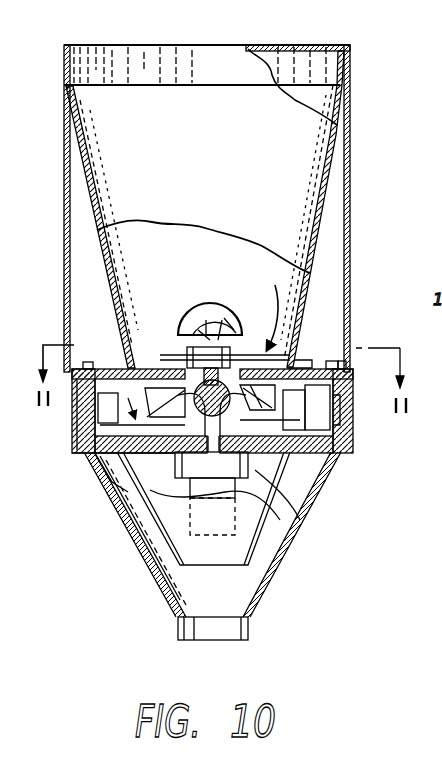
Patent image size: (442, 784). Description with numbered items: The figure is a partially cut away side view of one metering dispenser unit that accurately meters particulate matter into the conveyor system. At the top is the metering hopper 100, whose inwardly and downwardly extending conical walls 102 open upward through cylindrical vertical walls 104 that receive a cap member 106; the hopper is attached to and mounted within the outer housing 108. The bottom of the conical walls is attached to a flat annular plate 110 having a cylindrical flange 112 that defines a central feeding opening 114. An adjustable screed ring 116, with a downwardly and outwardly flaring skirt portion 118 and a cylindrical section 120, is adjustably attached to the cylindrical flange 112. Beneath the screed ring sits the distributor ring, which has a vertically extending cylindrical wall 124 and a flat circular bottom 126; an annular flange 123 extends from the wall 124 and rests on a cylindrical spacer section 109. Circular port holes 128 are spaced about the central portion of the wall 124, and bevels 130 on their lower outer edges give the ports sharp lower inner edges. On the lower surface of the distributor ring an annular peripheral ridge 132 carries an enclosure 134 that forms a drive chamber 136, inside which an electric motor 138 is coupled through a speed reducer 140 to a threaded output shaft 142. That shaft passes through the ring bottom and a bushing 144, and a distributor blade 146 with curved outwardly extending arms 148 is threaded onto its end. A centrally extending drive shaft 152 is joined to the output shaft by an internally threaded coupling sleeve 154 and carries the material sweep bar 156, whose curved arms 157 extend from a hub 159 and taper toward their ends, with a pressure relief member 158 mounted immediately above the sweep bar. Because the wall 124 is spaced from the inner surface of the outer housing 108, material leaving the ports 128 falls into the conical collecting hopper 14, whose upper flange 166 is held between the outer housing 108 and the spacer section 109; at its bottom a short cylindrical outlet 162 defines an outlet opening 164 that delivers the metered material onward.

The collecting hopper 14 is at (262, 585).
The metering hopper 100 is at (240, 185).
The conical walls 102 is at (310, 290).
The cylindrical vertical walls 104 is at (347, 72).
The cap member 106 is at (345, 47).
The outer housing 108 is at (344, 135).
The cylindrical spacer section 109 is at (367, 363).
The flat annular plate 110 is at (331, 365).
The cylindrical flange 112 is at (330, 384).
The central feeding opening 114 is at (300, 455).
The adjustable screed ring 116 is at (182, 360).
The skirt portion 118 is at (288, 492).
The cylindrical section 120 is at (325, 392).
The annular flange 123 is at (78, 408).
The cylindrical wall 124 is at (84, 442).
The flat circular bottom 126 is at (130, 488).
The circular port holes 128 is at (110, 453).
The bevels 130 is at (190, 458).
The annular peripheral ridge 132 is at (250, 470).
The enclosure 134 is at (126, 500).
The drive chamber 136 is at (288, 516).
The electric motor 138 is at (160, 542).
The speed reducer 140 is at (150, 530).
The threaded output shaft 142 is at (180, 335).
The bushing 144 is at (262, 535).
The distributor blade 146 is at (170, 405).
The curved outwardly extending arms 148 is at (107, 400).
The drive shaft 152 is at (208, 318).
The internally threaded coupling sleeve 154 is at (202, 318).
The material sweep bar 156 is at (274, 306).
The curved arms 157 is at (290, 362).
The pressure relief member 158 is at (230, 308).
The hub 159 is at (233, 322).
The cylindrical outlet 162 is at (250, 630).
The outlet opening 164 is at (226, 632).
The flange 166 is at (340, 440).